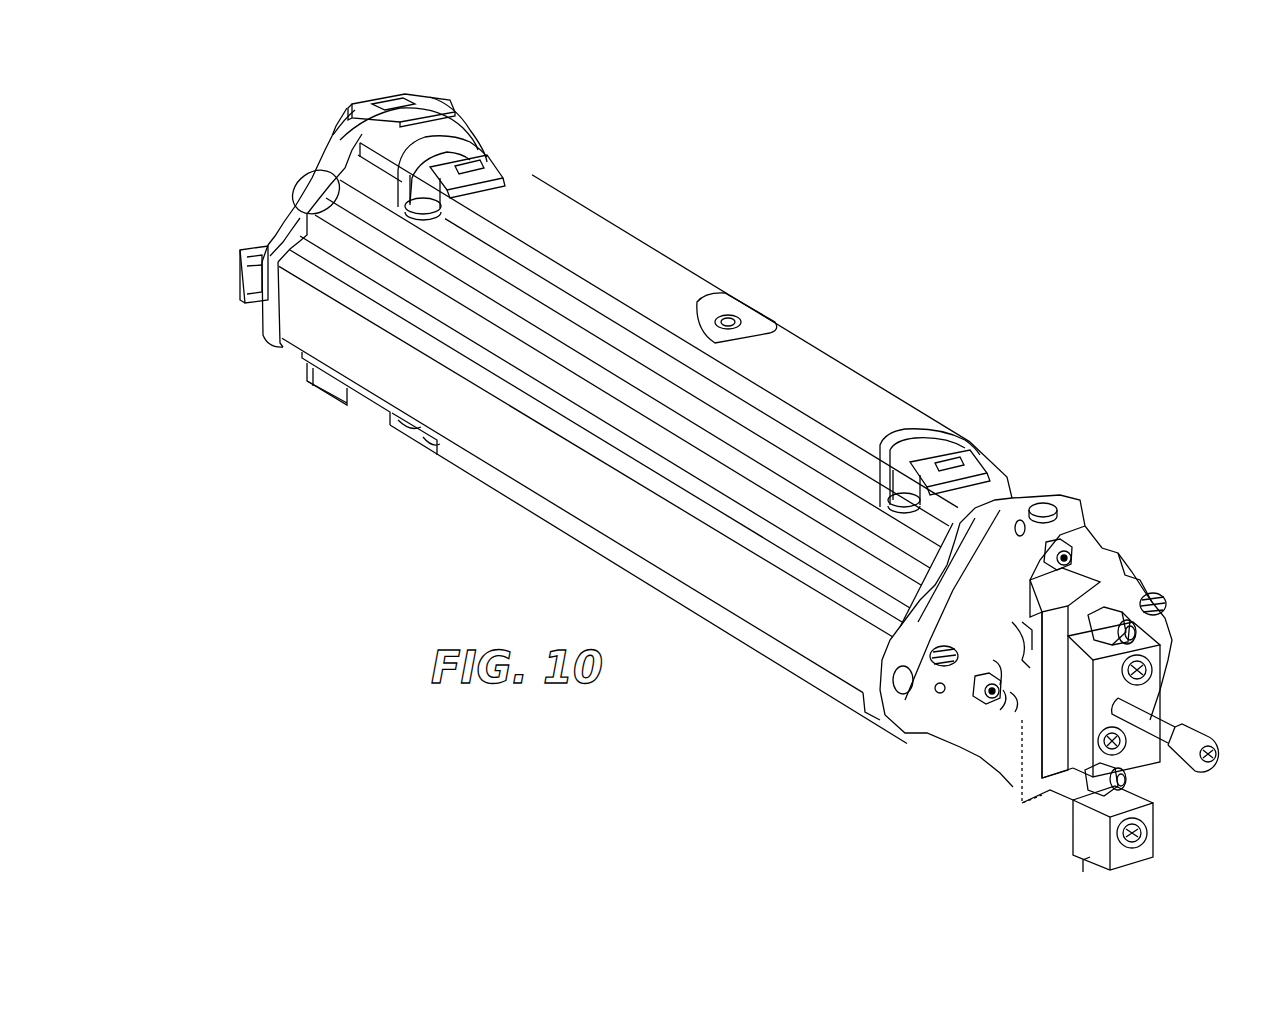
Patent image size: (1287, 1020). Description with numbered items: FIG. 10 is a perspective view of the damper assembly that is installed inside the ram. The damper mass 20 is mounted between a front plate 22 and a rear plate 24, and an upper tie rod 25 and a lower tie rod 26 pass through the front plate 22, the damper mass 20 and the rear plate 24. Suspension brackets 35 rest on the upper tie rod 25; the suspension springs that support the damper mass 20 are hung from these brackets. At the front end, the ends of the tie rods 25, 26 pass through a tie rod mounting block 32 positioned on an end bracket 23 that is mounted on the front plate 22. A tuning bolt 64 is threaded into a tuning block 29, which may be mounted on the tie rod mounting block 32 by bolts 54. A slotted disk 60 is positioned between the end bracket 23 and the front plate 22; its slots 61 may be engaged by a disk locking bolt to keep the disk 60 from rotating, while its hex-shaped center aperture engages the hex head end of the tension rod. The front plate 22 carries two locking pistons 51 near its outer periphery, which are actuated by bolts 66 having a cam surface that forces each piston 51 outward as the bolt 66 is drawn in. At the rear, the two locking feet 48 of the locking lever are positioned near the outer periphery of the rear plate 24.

The damper mass 20 is at (515, 486).
The front plate 22 is at (978, 718).
The end bracket 23 is at (1055, 808).
The rear plate 24 is at (263, 338).
The upper tie rod 25 is at (1138, 632).
The lower tie rod 26 is at (1125, 779).
The tuning block 29 is at (1085, 722).
The tie rod mounting block 32 is at (1057, 735).
The suspension brackets 35 is at (492, 173).
The locking feet 48 is at (376, 106).
The locking pistons 51 is at (1047, 505).
The bolts 54 is at (1145, 670).
The slotted disk 60 is at (1028, 683).
The slots 61 is at (1027, 647).
The tuning bolt 64 is at (1158, 706).
The bolts 66 is at (1046, 558).